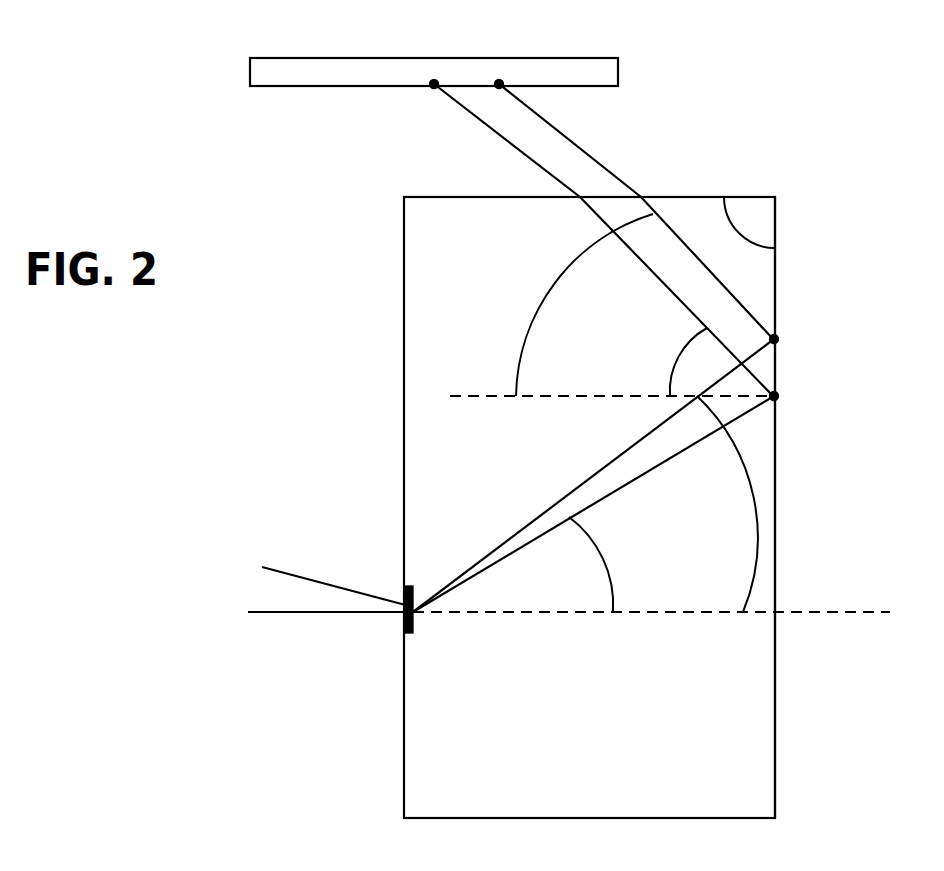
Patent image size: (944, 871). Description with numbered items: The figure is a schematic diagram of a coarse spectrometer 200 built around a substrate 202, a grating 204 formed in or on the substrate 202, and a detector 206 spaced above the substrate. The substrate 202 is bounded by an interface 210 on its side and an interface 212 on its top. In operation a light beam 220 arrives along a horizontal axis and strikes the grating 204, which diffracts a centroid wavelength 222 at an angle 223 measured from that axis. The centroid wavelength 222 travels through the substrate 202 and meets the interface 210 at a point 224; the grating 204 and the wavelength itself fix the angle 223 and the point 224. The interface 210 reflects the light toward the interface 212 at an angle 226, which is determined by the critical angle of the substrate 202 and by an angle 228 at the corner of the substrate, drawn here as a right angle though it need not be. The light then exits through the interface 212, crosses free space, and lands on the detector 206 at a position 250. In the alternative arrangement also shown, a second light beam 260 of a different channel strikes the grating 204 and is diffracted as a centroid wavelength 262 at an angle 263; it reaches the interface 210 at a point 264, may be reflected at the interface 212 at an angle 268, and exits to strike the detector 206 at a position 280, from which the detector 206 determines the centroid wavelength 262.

The coarse spectrometer 200 is at (94, 361).
The substrate 202 is at (559, 795).
The grating 204 is at (413, 634).
The detector 206 is at (618, 57).
The interface 210 is at (775, 678).
The interface 212 is at (443, 199).
The light beam 220 is at (290, 615).
The centroid wavelength 222 is at (638, 477).
The angle 223 is at (606, 553).
The point 224 is at (775, 396).
The angle 226 is at (682, 348).
The angle 228 is at (731, 233).
The position 250 is at (434, 84).
The light beam 260 is at (293, 573).
The centroid wavelength 262 is at (488, 555).
The angle 263 is at (748, 522).
The point 264 is at (775, 339).
The angle 268 is at (535, 308).
The position 280 is at (499, 84).